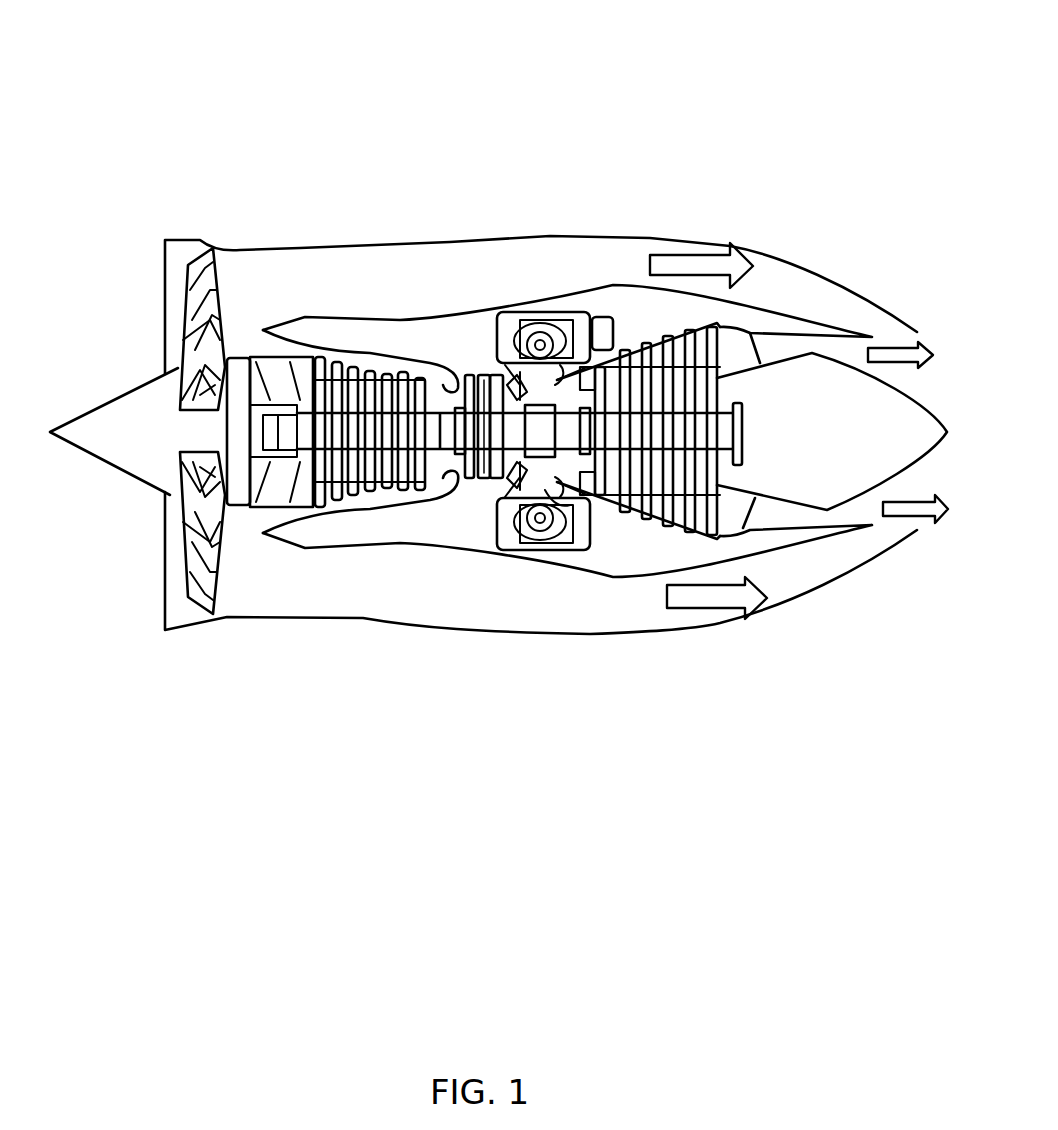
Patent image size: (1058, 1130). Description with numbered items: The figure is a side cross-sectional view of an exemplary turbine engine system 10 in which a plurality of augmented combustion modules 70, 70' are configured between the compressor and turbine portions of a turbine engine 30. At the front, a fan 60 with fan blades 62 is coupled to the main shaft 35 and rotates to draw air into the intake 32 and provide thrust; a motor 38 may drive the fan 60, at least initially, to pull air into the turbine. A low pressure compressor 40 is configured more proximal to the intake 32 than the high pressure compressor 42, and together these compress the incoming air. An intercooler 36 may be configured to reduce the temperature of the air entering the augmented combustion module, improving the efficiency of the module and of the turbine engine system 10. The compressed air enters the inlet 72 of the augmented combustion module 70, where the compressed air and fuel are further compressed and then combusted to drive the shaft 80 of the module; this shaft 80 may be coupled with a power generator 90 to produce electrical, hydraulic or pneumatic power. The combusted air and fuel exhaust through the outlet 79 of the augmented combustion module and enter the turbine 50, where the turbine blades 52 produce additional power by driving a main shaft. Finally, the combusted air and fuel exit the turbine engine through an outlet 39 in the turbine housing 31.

The turbine engine system 10 is at (276, 110).
The turbine engine 30 is at (358, 278).
The turbine housing 31 is at (800, 322).
The intake 32 is at (172, 364).
The main shaft 35 is at (448, 378).
The intercooler 36 is at (463, 495).
The motor 38 is at (243, 388).
The outlet 39 is at (905, 355).
The low pressure compressor 40 is at (405, 385).
The high pressure compressor 42 is at (487, 375).
The turbine 50 is at (690, 400).
The turbine blades 52 is at (640, 360).
The fan 60 is at (177, 330).
The fan blades 62 is at (183, 547).
The augmented combustion module 70 is at (543, 608).
The augmented combustion module 70' is at (555, 267).
The inlet 72 is at (512, 470).
The outlet 79 is at (560, 520).
The shaft 80 is at (533, 325).
The power generator 90 is at (585, 345).